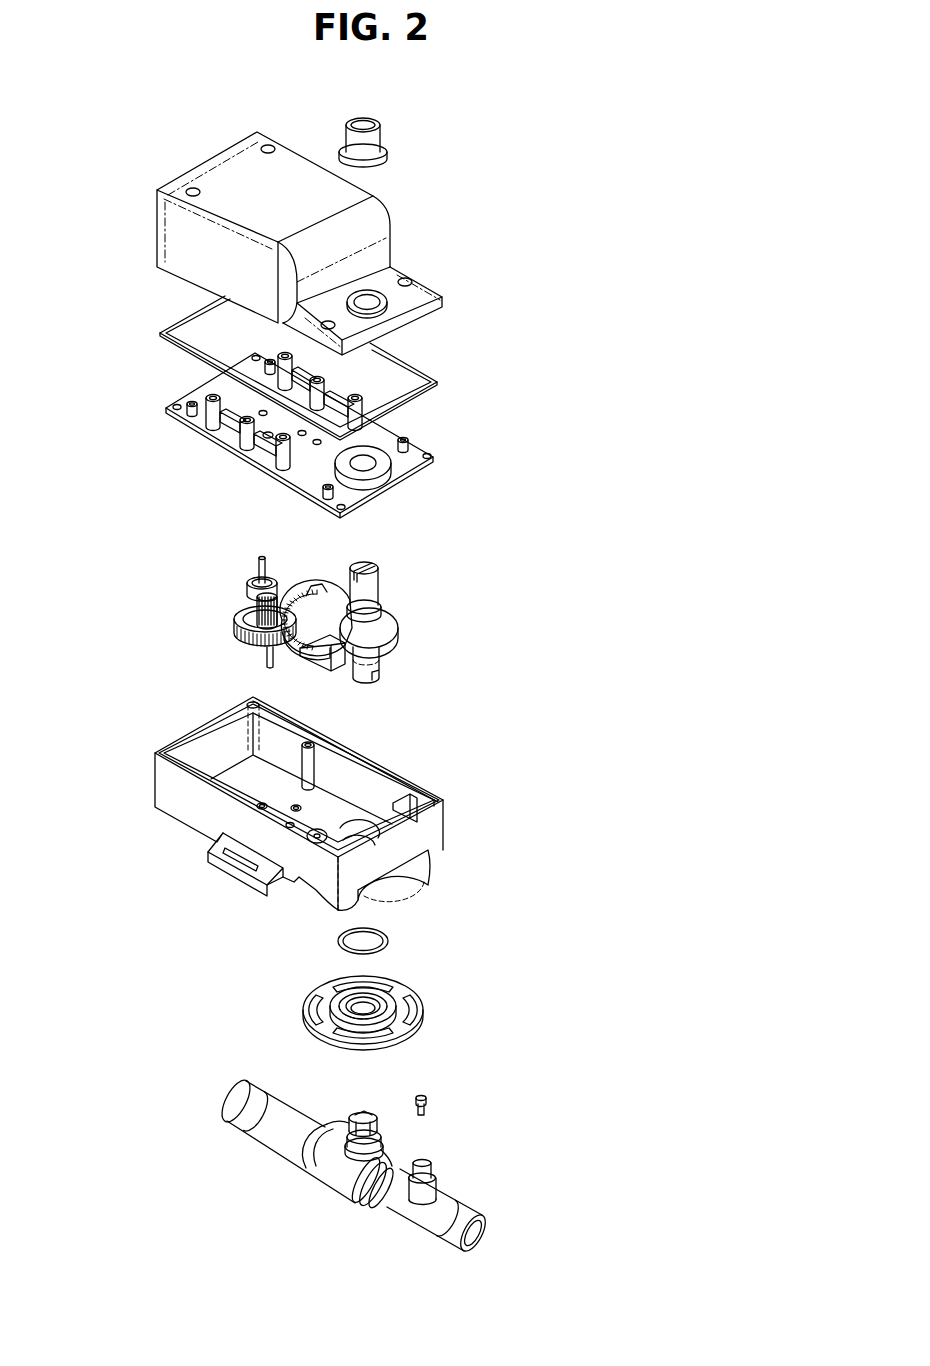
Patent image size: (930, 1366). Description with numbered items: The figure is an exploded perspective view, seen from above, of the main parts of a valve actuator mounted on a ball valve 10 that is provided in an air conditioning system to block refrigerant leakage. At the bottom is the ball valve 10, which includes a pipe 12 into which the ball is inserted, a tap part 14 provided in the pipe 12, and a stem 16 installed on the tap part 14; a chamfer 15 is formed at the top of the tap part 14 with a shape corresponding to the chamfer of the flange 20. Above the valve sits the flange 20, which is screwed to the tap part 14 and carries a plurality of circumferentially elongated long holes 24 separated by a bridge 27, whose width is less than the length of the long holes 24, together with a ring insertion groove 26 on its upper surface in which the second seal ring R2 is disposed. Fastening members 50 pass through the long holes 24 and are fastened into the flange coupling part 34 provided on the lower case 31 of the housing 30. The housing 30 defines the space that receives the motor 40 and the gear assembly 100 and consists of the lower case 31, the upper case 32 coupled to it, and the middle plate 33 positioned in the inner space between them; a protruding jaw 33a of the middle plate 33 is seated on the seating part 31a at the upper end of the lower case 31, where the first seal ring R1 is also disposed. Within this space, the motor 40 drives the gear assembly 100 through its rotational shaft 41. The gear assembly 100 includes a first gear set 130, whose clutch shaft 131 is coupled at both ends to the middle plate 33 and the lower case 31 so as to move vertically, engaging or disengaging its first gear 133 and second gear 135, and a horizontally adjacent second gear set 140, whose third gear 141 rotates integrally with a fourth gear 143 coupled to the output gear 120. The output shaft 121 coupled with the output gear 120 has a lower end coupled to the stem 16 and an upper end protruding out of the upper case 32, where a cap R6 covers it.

The ball valve 10 is at (316, 1165).
The pipe 12 is at (348, 1190).
The tap part 14 is at (343, 1148).
The chamfer 15 is at (348, 1133).
The stem 16 is at (352, 1114).
The flange 20 is at (371, 1022).
The long holes 24 is at (313, 1010).
The ring insertion groove 26 is at (425, 1012).
The bridge 27 is at (335, 985).
The housing 30 is at (371, 528).
The lower case 31 is at (267, 803).
The seating part 31a is at (372, 760).
The upper case 32 is at (165, 229).
The middle plate 33 is at (266, 436).
The protruding jaw 33a is at (200, 432).
The flange coupling part 34 is at (430, 893).
The motor 40 is at (226, 556).
The rotational shaft 41 is at (260, 562).
The fastening members 50 is at (439, 1104).
The gear assembly 100 is at (324, 604).
The output gear 120 is at (312, 652).
The output shaft 121 is at (378, 588).
The first gear set 130 is at (229, 624).
The clutch shaft 131 is at (262, 657).
The first gear 133 is at (250, 616).
The second gear 135 is at (233, 628).
The second gear set 140 is at (314, 585).
The third gear 141 is at (333, 592).
The fourth gear 143 is at (300, 600).
The first seal ring R1 is at (158, 334).
The second seal ring R2 is at (340, 940).
The cap R6 is at (377, 137).